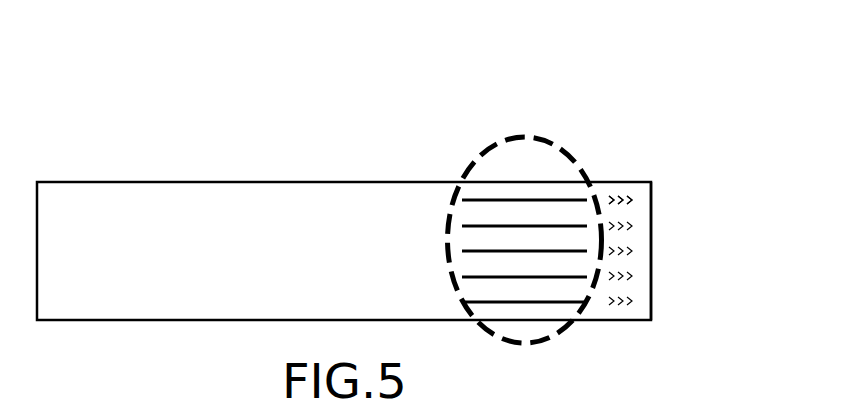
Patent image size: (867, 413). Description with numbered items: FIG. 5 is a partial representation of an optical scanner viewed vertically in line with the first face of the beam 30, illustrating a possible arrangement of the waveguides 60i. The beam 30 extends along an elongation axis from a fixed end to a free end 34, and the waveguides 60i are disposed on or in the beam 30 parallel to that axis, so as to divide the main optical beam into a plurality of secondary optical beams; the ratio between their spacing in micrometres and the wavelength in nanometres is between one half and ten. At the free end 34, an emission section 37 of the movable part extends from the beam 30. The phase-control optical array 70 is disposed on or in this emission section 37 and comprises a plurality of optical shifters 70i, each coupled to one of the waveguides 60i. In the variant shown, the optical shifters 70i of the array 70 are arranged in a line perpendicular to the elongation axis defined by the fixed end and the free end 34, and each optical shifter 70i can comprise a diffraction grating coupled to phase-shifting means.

The beam 30 is at (313, 182).
The waveguides 60i is at (517, 139).
The free end 34 is at (652, 250).
The phase-control optical array 70 is at (652, 326).
The optical shifter 70i is at (619, 199).
The emission section 37 is at (647, 213).